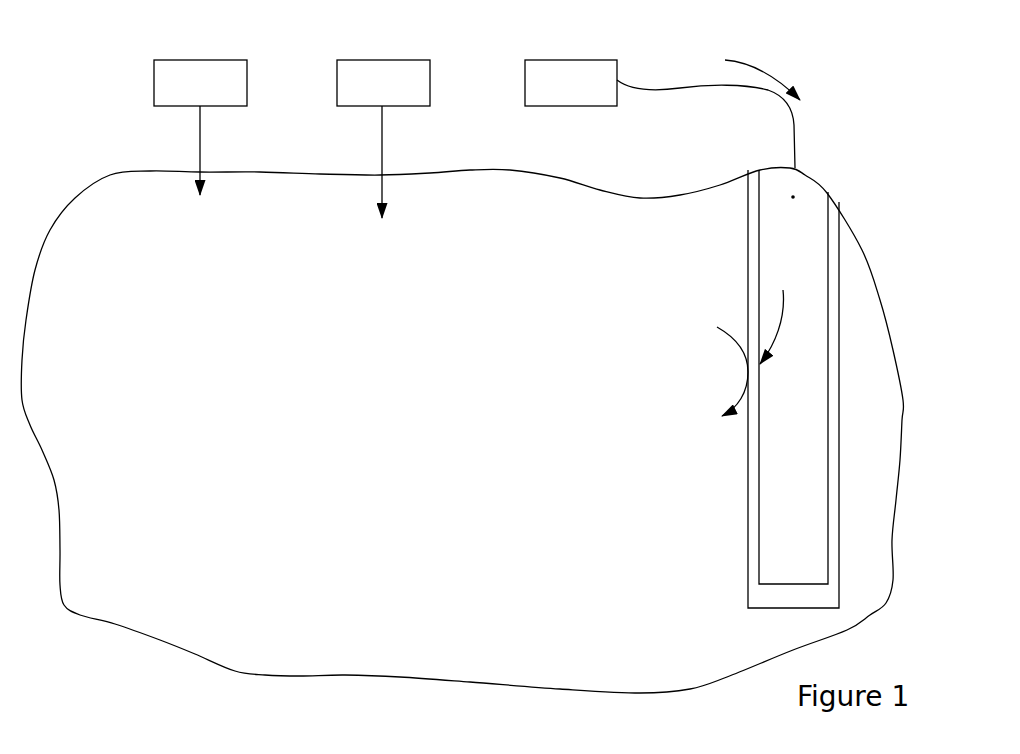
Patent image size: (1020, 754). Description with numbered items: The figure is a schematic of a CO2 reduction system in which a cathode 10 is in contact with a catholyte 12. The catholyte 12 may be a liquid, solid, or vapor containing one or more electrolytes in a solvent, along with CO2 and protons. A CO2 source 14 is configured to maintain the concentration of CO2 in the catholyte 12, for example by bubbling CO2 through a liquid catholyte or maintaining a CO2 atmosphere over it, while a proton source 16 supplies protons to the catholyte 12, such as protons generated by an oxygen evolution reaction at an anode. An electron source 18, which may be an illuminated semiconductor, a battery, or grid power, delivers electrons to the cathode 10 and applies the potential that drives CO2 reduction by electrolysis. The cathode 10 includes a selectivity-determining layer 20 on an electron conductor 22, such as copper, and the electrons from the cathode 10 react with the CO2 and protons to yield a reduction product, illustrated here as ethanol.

The cathode 10 is at (718, 266).
The catholyte 12 is at (405, 630).
The CO2 source 14 is at (372, 72).
The proton source 16 is at (199, 78).
The electron source 18 is at (565, 62).
The selectivity-determining layer 20 is at (755, 538).
The electron conductor 22 is at (775, 447).